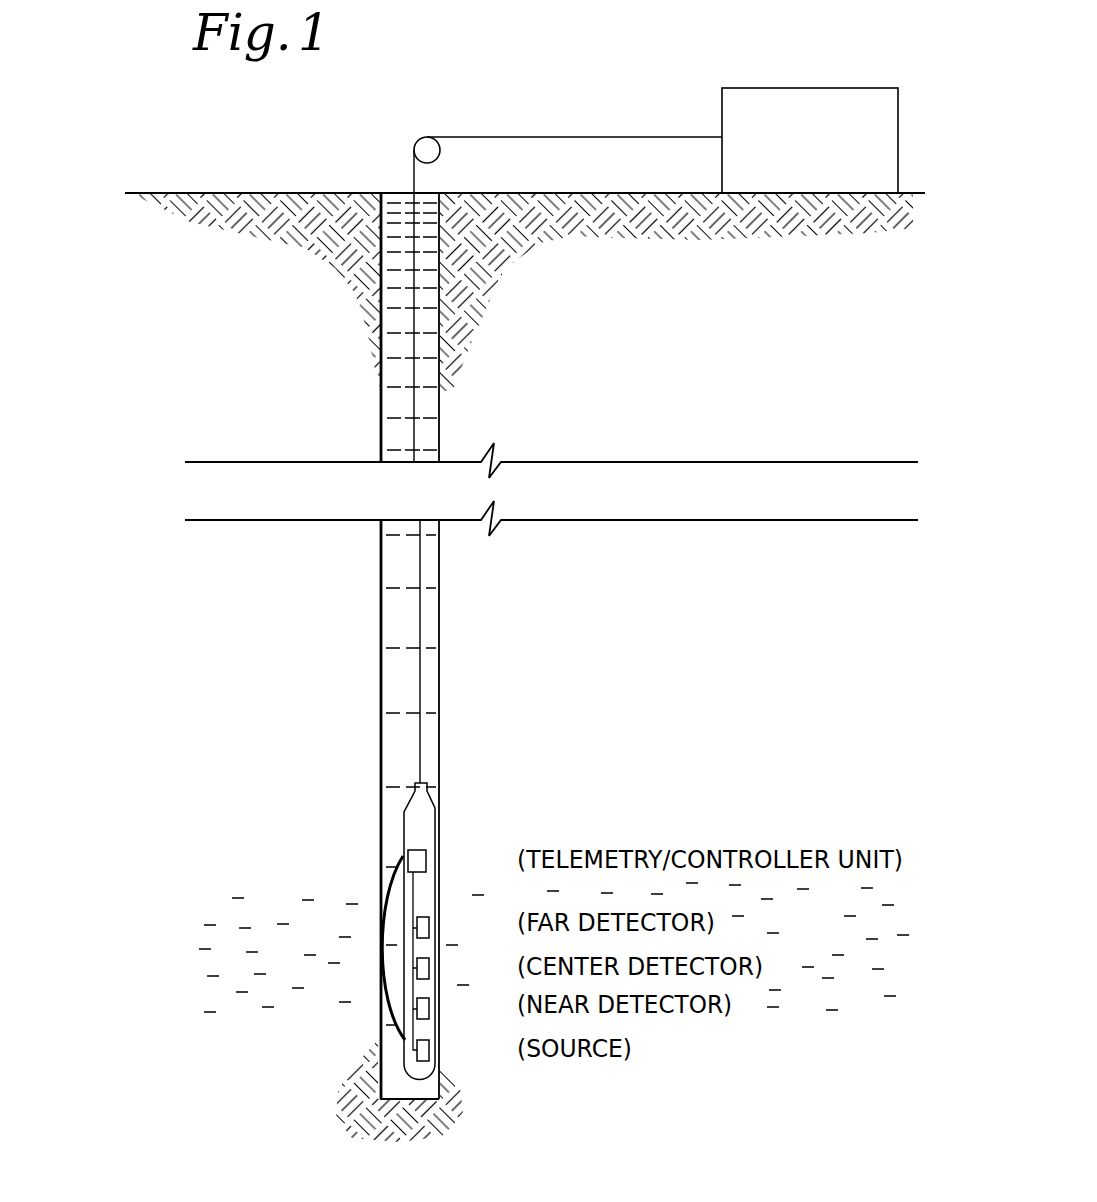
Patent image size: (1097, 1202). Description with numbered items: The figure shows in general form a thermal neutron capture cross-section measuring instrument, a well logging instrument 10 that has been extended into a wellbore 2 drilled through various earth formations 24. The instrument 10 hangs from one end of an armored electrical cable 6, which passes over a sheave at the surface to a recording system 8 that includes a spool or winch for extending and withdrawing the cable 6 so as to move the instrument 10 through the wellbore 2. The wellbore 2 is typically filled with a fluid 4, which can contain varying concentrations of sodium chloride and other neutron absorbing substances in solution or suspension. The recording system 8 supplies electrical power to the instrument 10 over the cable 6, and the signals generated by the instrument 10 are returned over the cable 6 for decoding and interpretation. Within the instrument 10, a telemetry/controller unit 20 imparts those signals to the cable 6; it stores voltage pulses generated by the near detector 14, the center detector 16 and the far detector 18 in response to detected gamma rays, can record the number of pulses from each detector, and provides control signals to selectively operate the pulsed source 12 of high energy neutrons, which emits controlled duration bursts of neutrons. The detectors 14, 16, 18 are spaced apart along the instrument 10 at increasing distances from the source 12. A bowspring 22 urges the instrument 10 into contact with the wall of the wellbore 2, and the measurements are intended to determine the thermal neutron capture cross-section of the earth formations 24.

The wellbore 2 is at (387, 620).
The fluid 4 is at (407, 751).
The armored electrical cable 6 is at (541, 137).
The recording system 8 is at (898, 146).
The well logging instrument 10 is at (402, 810).
The pulsed source 12 is at (429, 1050).
The near detector 14 is at (429, 1008).
The center detector 16 is at (429, 968).
The far detector 18 is at (429, 927).
The telemetry/controller unit 20 is at (426, 861).
The bowspring 22 is at (397, 877).
The earth formations 24 is at (824, 929).